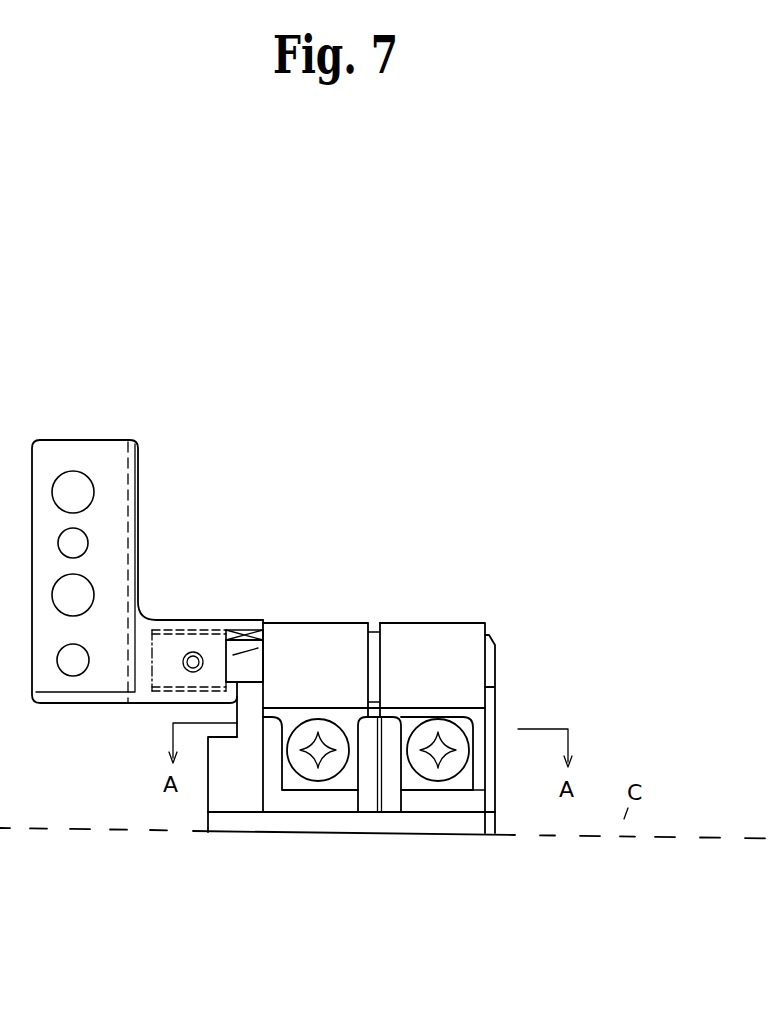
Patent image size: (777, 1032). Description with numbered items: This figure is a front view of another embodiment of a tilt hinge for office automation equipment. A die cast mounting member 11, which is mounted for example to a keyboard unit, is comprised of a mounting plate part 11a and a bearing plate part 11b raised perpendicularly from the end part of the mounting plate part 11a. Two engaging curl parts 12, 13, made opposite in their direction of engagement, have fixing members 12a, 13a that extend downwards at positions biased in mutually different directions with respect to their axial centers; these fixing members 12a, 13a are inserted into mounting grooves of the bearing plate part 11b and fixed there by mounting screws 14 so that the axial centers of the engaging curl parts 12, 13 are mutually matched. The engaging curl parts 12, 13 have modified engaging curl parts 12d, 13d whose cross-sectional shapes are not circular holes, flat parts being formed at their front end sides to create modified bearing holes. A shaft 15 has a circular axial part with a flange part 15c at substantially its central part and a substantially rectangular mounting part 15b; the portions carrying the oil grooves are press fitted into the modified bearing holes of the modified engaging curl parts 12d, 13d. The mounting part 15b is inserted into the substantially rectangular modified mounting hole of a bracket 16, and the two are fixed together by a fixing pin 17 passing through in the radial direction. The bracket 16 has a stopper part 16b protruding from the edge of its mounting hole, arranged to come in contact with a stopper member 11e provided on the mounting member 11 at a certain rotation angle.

The mounting member 11 is at (497, 699).
The mounting plate part 11a is at (303, 810).
The bearing plate part 11b is at (487, 737).
The stopper member 11e is at (188, 668).
The engaging curl part 12 is at (283, 620).
The fixing member 12a is at (280, 780).
The modified engaging curl part 12d is at (330, 630).
The engaging curl part 13 is at (472, 630).
The fixing member 13a is at (486, 790).
The modified engaging curl part 13d is at (434, 635).
The mounting screw 14 is at (332, 775).
The shaft 15 is at (250, 665).
The mounting part 15b is at (245, 655).
The flange part 15c is at (372, 625).
The bracket 16 is at (139, 518).
The stopper part 16b is at (240, 625).
The fixing pin 17 is at (232, 706).